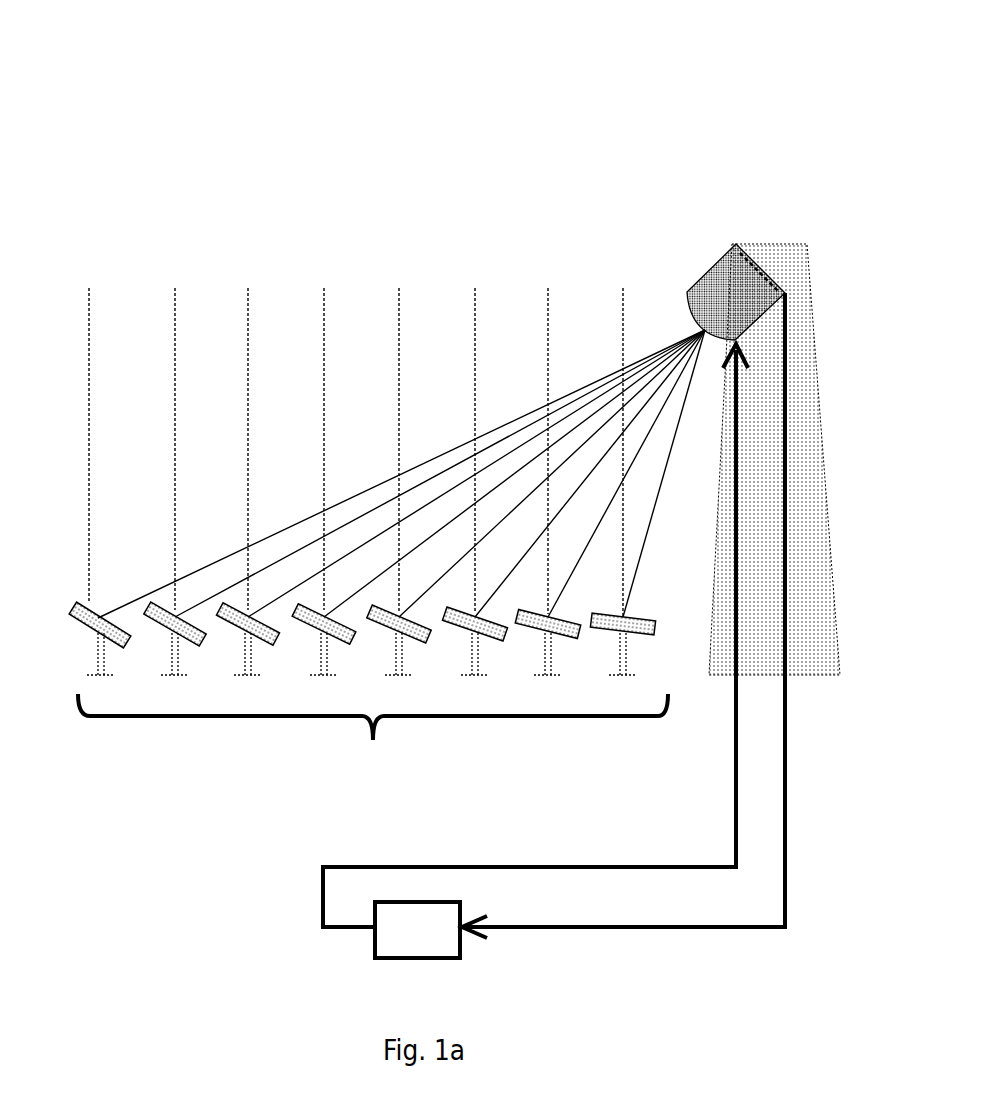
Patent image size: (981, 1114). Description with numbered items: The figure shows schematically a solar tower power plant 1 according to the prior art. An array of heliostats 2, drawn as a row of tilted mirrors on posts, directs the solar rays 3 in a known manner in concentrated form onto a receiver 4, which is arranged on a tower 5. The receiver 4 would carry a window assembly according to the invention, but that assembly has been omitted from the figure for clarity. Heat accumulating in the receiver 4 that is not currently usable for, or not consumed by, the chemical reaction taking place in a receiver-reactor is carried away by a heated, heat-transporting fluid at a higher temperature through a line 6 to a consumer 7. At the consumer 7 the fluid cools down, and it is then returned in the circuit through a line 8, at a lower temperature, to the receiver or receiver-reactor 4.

The solar tower power plant 1 is at (373, 173).
The array of heliostats 2 is at (387, 537).
The solar rays 3 is at (182, 455).
The receiver 4 is at (689, 234).
The tower 5 is at (815, 415).
The line 6 is at (732, 930).
The consumer 7 is at (407, 944).
The line 8 is at (476, 866).